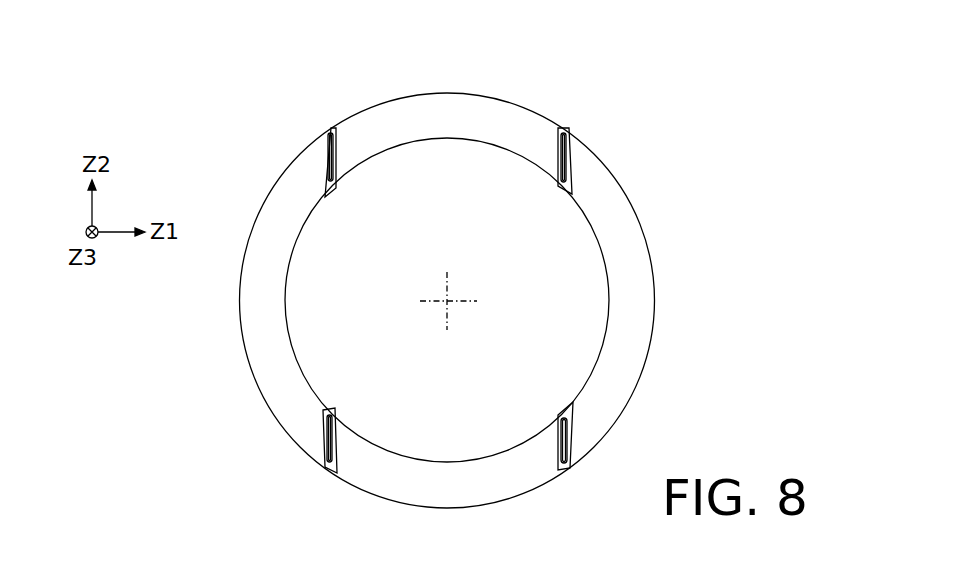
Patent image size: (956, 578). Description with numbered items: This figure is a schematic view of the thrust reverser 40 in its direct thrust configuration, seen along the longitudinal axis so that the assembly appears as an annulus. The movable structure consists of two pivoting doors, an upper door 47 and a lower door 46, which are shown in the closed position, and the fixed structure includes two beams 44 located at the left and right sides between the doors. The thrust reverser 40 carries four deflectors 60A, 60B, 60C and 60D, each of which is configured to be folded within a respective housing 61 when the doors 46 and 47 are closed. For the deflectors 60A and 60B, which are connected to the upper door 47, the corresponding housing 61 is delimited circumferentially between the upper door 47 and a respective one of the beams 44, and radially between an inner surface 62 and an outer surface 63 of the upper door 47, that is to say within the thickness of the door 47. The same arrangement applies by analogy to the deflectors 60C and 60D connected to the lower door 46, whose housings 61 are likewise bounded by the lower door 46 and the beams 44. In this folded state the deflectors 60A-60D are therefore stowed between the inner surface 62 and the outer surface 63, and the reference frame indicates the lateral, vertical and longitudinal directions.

The thrust reverser 40 is at (208, 100).
The beam 44 is at (279, 250).
The lower door 46 is at (440, 495).
The upper door 47 is at (465, 112).
The deflector 60A is at (573, 147).
The deflector 60B is at (337, 152).
The deflector 60C is at (573, 430).
The deflector 60D is at (322, 432).
The housing 61 is at (331, 128).
The inner surface 62 is at (502, 150).
The outer surface 63 is at (423, 93).